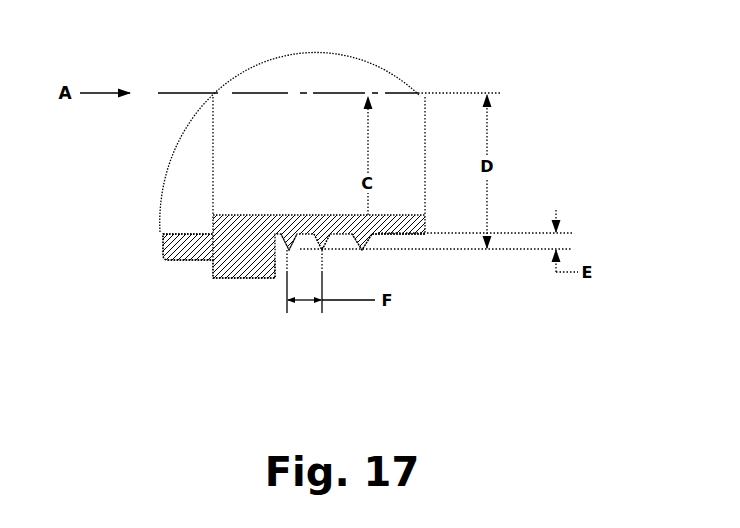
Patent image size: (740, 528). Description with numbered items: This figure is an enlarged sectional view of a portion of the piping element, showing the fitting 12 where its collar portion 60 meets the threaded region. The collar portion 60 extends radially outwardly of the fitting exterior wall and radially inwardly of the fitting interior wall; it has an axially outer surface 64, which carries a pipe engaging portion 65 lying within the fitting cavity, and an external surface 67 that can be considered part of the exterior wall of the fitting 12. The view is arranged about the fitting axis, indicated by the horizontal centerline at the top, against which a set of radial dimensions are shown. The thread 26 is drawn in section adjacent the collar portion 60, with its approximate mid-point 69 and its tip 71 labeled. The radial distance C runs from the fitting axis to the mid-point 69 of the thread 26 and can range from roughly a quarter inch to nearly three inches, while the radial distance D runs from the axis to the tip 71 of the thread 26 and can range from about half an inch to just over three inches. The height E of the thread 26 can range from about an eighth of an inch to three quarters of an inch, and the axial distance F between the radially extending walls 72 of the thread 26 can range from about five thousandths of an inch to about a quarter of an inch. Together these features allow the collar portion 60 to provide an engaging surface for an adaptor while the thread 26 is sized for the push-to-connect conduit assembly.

The fitting 12 is at (143, 234).
The thread 26 is at (289, 238).
The collar portion 60 is at (240, 254).
The axially outer surface 64 is at (208, 265).
The pipe engaging portion 65 is at (212, 222).
The external surface 67 is at (226, 280).
The mid-point of the thread 69 is at (366, 242).
The tip of the thread 71 is at (325, 249).
The radially extending walls 72 is at (357, 238).